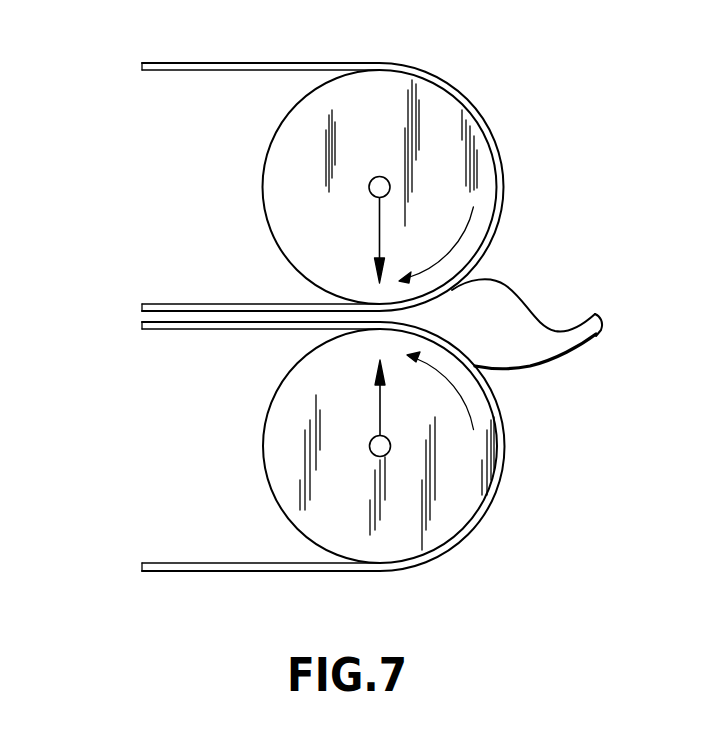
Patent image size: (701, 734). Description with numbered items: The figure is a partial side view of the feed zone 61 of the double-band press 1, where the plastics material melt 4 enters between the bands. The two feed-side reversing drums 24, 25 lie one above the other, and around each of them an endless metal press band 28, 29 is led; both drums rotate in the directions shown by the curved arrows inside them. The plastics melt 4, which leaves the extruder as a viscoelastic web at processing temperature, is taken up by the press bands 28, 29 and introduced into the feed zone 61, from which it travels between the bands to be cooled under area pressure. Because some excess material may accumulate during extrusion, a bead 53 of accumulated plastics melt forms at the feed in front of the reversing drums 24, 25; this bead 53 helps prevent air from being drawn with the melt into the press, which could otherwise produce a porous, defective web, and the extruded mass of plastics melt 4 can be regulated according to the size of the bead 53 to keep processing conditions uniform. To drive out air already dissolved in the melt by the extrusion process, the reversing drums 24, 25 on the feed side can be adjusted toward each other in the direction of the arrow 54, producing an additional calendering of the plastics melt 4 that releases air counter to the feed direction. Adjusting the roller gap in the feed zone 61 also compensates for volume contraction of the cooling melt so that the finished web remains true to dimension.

The double-band press 1 is at (130, 138).
The reversing drum 24 is at (443, 118).
The reversing drum 25 is at (472, 497).
The press band 28 is at (244, 62).
The press band 29 is at (213, 572).
The bead 53 is at (507, 311).
The plastics material melt 4 is at (597, 334).
The arrow 54 is at (378, 220).
The feed zone 61 is at (492, 377).